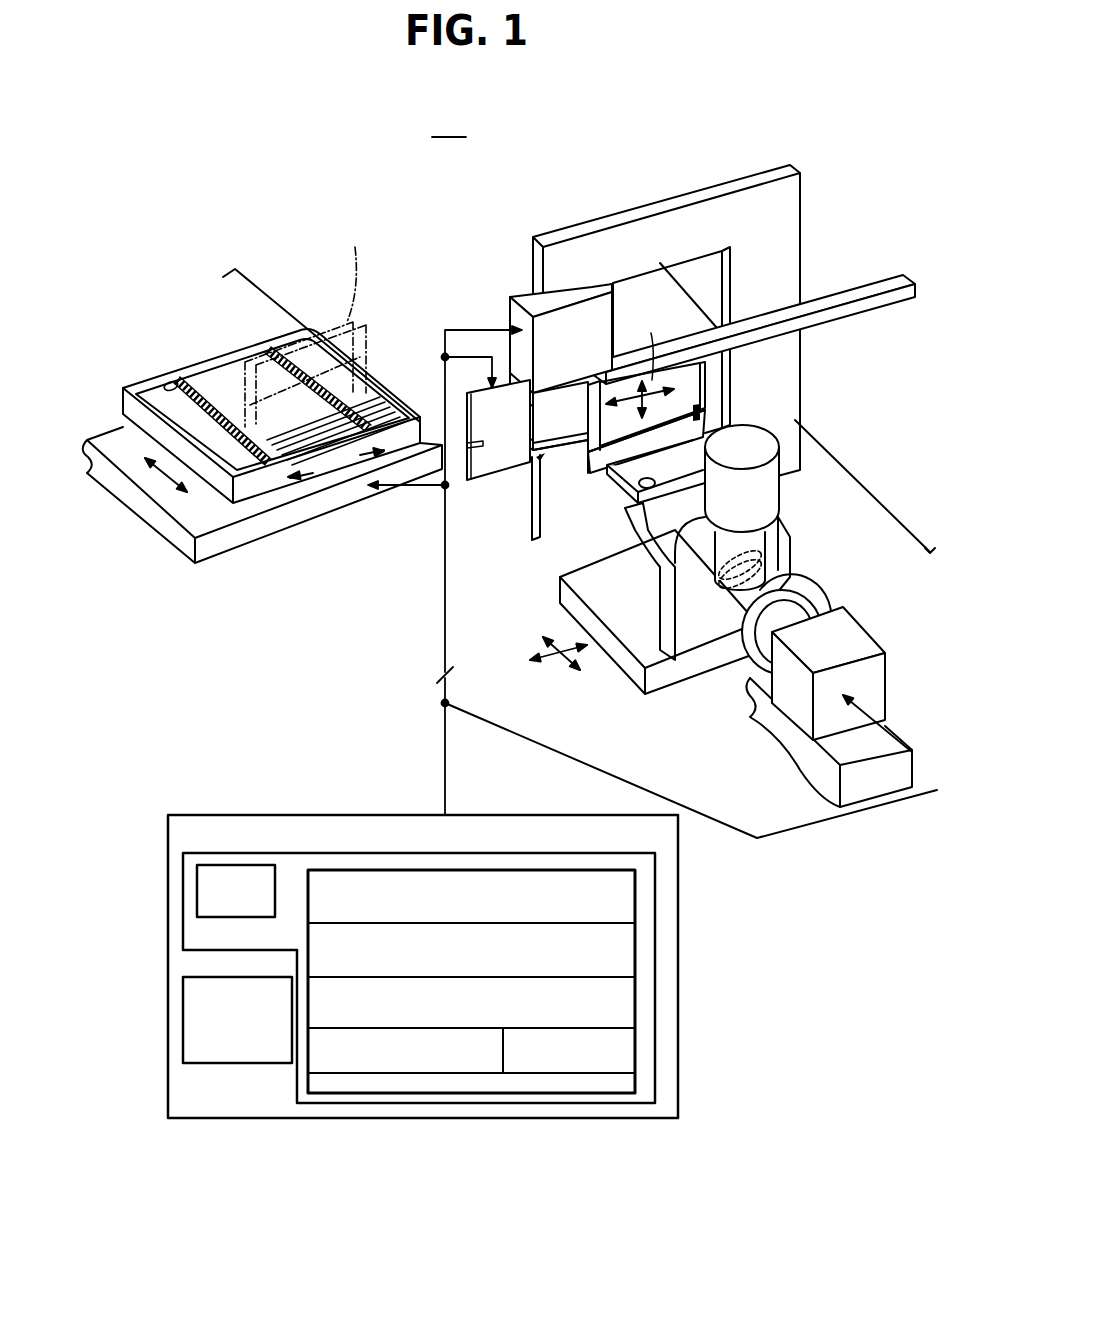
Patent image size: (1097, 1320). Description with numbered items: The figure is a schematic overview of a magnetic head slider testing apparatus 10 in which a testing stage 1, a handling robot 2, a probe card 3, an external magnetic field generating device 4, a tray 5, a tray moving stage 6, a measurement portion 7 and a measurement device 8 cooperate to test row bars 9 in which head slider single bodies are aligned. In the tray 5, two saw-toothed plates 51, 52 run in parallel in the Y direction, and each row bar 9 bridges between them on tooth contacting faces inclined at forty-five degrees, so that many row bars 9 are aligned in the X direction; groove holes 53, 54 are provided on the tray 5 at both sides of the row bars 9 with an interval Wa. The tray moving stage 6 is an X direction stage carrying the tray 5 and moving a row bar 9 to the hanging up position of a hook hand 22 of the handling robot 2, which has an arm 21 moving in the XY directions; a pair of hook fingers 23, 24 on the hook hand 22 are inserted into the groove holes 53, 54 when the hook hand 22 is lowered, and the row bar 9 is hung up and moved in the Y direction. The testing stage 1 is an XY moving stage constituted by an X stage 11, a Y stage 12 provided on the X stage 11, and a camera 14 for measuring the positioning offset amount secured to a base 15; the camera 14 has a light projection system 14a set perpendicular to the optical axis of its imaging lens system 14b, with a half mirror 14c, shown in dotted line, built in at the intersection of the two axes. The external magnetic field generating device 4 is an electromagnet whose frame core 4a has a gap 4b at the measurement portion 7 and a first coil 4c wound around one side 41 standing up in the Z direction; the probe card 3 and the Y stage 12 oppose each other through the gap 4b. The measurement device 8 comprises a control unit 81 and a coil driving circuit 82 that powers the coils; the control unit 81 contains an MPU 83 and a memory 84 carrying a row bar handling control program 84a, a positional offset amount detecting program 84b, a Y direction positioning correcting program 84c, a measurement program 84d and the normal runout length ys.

The testing stage 1 is at (584, 509).
The handling robot 2 is at (678, 328).
The probe card 3 is at (447, 378).
The external magnetic field generating device 4 is at (736, 168).
The frame core 4a is at (672, 228).
The gap 4b is at (532, 458).
The first coil 4c is at (508, 317).
The tray 5 is at (213, 353).
The tray moving stage 6 is at (271, 526).
The measurement portion 7 is at (560, 495).
The measurement device 8 is at (274, 815).
The row bar 9 is at (297, 438).
The magnetic head slider testing apparatus 10 is at (449, 124).
The X stage 11 is at (633, 642).
The Y stage 12 is at (687, 453).
The camera 14 is at (792, 707).
The light projection system 14a is at (768, 488).
The imaging lens system 14b is at (773, 580).
The half mirror 14c is at (767, 552).
The base 15 is at (873, 530).
The arm 21 is at (740, 317).
The hook hand 22 is at (812, 352).
The hook finger 23 is at (570, 400).
The hook finger 24 is at (705, 395).
The one side of the frame core 41 is at (532, 535).
The plate having saw teeth 51 is at (180, 383).
The plate having saw teeth 52 is at (273, 350).
The groove hole 53 is at (167, 390).
The groove hole 54 is at (293, 363).
The control unit 81 is at (215, 933).
The coil driving circuit 82 is at (183, 990).
The microprocessor (MPU) 83 is at (197, 872).
The memory 84 is at (635, 1073).
The row bar handling control program 84a is at (625, 905).
The positional offset amount detecting program 84b is at (633, 938).
The Y direction positioning correcting program 84c is at (625, 1008).
The measurement program 84d is at (497, 1060).